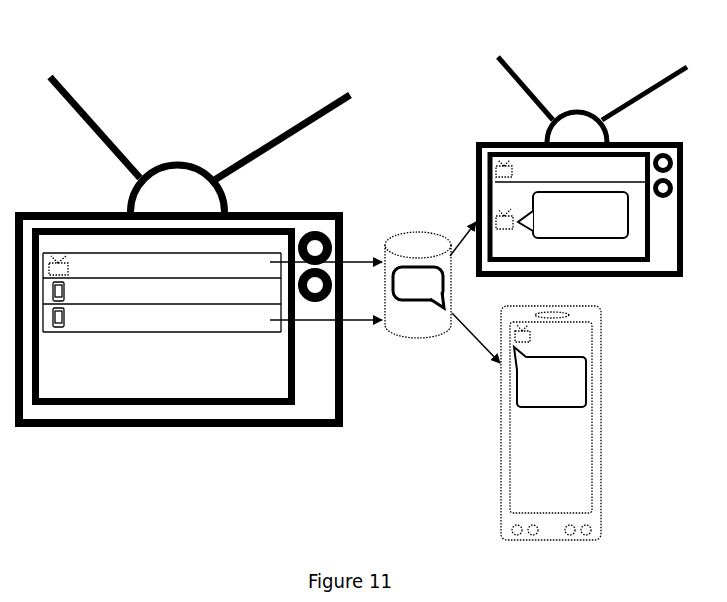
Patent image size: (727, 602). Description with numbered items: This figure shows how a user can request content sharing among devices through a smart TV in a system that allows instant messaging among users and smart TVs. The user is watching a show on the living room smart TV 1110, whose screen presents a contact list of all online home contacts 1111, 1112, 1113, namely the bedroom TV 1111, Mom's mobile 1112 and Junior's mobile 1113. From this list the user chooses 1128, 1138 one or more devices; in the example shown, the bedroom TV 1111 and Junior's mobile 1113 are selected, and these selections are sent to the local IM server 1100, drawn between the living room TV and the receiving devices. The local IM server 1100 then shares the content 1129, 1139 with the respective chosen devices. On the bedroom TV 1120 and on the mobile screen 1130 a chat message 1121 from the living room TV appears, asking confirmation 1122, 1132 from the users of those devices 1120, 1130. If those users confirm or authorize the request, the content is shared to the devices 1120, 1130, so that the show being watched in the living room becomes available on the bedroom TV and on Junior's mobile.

The local IM server 1100 is at (418, 285).
The smart TV 1110 is at (184, 250).
The online home contact (bedroom TV) 1111 is at (159, 265).
The online home contact (Mom's mobile) 1112 is at (161, 291).
The online home contact (Junior's mobile) 1113 is at (161, 317).
The bedroom TV 1120 is at (583, 165).
The chat message 1121 is at (570, 171).
The confirmation request 1122 is at (562, 215).
The device selection 1128 is at (326, 255).
The content sharing to bedroom TV 1129 is at (458, 237).
The mobile screen 1130 is at (551, 423).
The confirmation request 1132 is at (550, 377).
The device selection 1138 is at (326, 312).
The content sharing to mobile 1139 is at (476, 338).